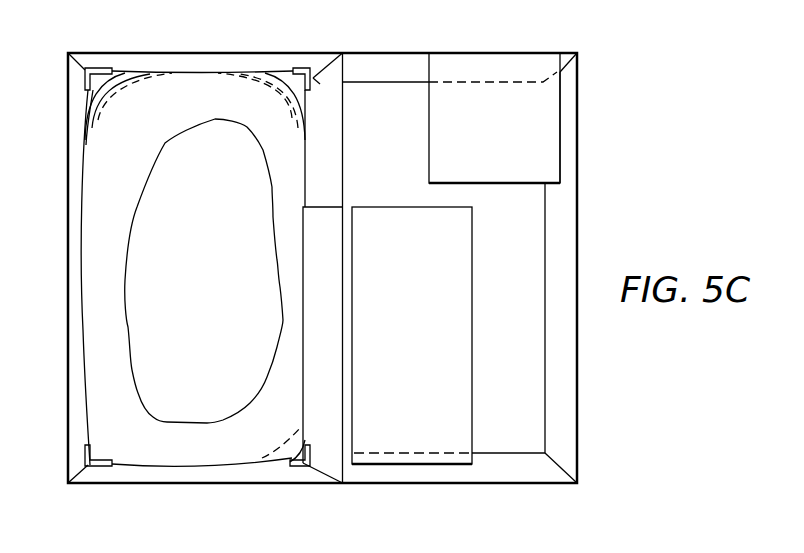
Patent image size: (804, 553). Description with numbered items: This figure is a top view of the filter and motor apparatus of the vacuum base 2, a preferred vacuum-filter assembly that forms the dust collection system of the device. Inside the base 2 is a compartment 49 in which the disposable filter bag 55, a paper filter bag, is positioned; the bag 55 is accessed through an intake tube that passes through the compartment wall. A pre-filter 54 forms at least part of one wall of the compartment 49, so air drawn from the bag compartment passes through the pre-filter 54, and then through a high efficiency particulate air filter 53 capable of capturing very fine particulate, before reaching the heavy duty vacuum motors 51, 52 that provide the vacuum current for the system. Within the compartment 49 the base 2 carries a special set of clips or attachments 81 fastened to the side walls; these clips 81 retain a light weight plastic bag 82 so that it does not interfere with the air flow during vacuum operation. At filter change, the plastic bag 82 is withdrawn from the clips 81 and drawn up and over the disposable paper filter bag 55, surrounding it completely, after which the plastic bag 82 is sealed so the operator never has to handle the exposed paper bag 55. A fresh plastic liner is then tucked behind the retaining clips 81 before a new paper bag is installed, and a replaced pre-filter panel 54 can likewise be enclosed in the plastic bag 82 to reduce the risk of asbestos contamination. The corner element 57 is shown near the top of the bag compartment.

The vacuum base 2 is at (580, 216).
The compartment 49 is at (100, 122).
The vacuum motor 51 is at (520, 60).
The vacuum motor 52 is at (493, 77).
The HEPA filter 53 is at (445, 465).
The pre-filter 54 is at (313, 418).
The disposable filter bag 55 is at (127, 292).
The corner support 57 is at (320, 88).
The clips 81 is at (95, 68).
The plastic bag 82 is at (172, 70).